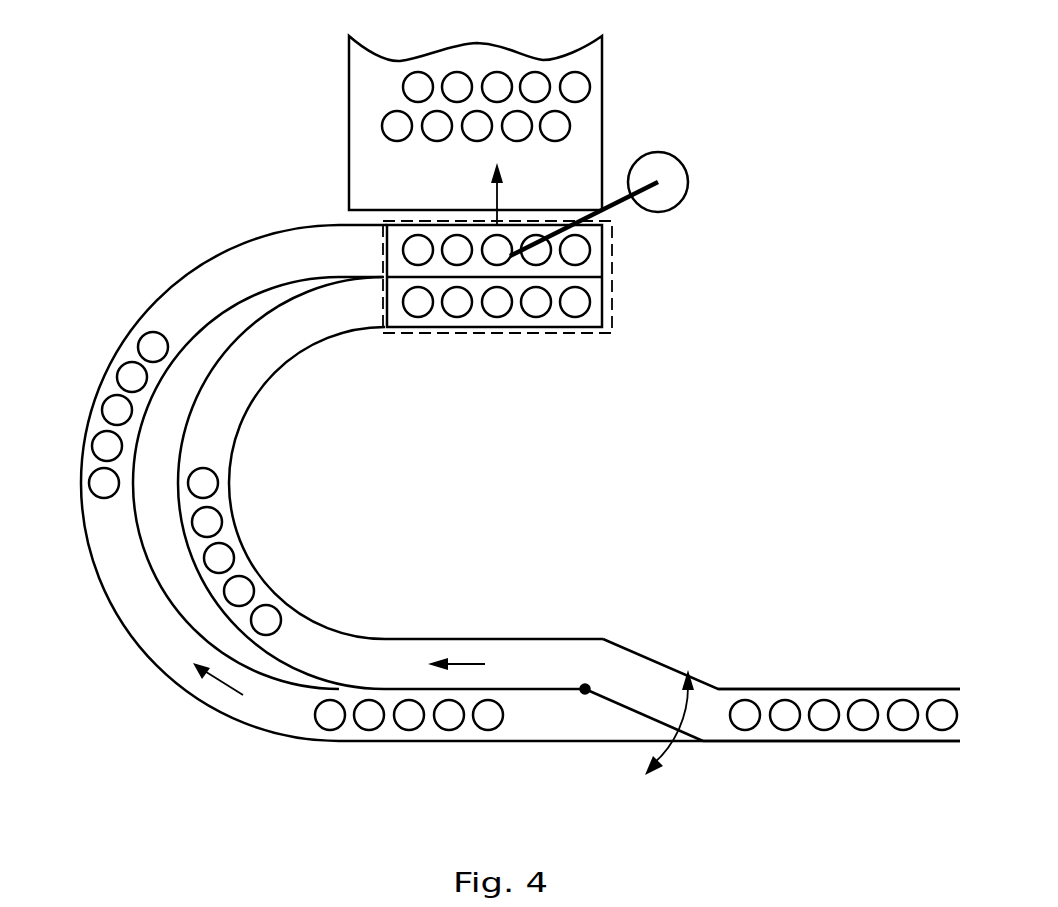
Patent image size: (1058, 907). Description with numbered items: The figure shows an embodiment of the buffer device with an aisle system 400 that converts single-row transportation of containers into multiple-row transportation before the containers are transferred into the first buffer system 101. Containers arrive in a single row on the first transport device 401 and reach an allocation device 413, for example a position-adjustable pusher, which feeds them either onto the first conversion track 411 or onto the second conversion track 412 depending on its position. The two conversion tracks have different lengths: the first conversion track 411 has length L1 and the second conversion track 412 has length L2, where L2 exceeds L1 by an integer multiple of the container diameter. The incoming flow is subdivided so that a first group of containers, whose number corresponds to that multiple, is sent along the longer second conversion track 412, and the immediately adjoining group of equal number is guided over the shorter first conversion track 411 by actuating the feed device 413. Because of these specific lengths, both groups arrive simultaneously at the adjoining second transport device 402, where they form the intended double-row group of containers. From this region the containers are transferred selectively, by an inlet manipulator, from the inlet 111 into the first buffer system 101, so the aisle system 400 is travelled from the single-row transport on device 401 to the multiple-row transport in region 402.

The aisle system 400 is at (197, 101).
The first buffer system 101 is at (602, 63).
The inlet 111 is at (688, 185).
The second transport device 402 is at (556, 327).
The first conversion track 411 is at (392, 638).
The second conversion track 412 is at (232, 718).
The allocation device 413 is at (657, 660).
The first transport device 401 is at (826, 689).
The length of first conversion track L1 is at (234, 551).
The length of second conversion track L2 is at (104, 415).